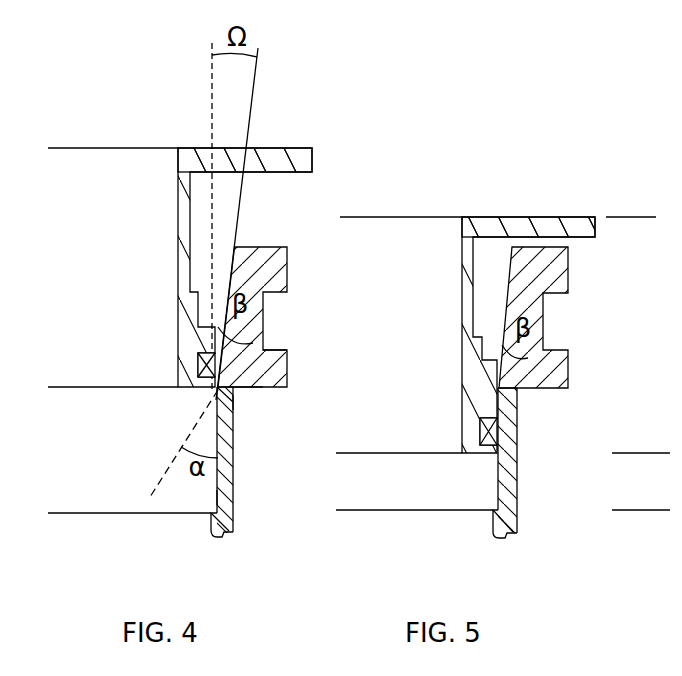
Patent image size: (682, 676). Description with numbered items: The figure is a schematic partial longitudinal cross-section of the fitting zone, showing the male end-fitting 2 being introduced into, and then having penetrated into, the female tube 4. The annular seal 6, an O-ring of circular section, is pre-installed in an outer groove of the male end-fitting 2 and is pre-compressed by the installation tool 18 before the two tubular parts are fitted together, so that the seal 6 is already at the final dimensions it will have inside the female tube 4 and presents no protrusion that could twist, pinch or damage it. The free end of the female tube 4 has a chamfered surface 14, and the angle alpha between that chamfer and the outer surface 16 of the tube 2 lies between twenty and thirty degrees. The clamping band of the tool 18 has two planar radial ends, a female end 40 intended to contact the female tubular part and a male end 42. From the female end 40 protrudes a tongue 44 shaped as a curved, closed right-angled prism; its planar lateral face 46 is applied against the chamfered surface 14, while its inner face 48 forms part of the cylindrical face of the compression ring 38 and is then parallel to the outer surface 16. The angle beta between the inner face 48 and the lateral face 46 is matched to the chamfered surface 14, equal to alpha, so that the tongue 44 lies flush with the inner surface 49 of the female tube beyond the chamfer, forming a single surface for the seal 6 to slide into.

In FIG. 4, the male end-fitting 2 is at (263, 158).
In FIG. 5, the male end-fitting 2 is at (577, 228).
In FIG. 4, the female tube 4 is at (229, 510).
In FIG. 5, the female tube 4 is at (507, 512).
In FIG. 4, the annular seal 6 is at (200, 360).
In FIG. 4, the chamfered surface 14 is at (236, 398).
In FIG. 4, the outer surface 16 is at (235, 487).
In FIG. 4, the installation tool 18 is at (265, 252).
In FIG. 5, the installation tool 18 is at (538, 267).
In FIG. 4, the compression ring 38 is at (285, 350).
In FIG. 4, the female end 40 is at (236, 390).
In FIG. 4, the male end 42 is at (203, 330).
In FIG. 4, the tongue 44 is at (226, 404).
In FIG. 5, the tongue 44 is at (505, 392).
In FIG. 4, the lateral face 46 is at (235, 402).
In FIG. 5, the inner face 48 is at (483, 418).
In FIG. 4, the inner surface 49 is at (217, 497).